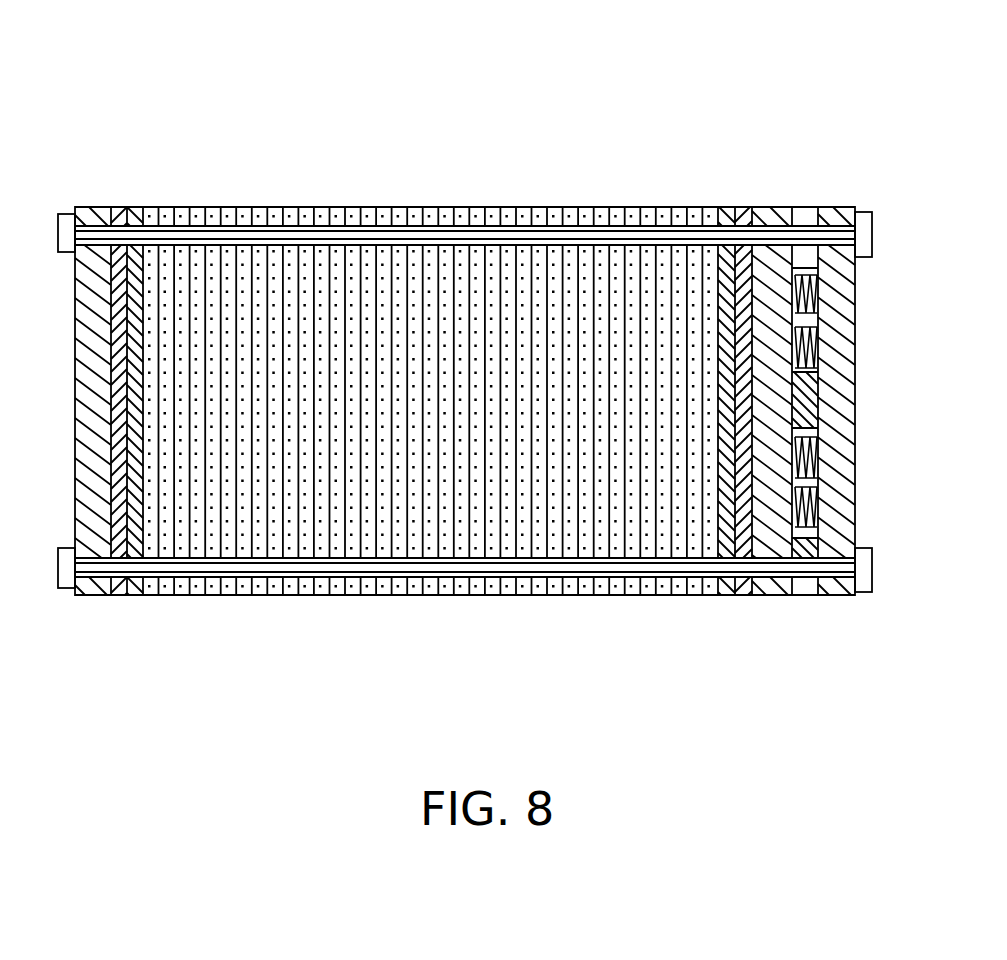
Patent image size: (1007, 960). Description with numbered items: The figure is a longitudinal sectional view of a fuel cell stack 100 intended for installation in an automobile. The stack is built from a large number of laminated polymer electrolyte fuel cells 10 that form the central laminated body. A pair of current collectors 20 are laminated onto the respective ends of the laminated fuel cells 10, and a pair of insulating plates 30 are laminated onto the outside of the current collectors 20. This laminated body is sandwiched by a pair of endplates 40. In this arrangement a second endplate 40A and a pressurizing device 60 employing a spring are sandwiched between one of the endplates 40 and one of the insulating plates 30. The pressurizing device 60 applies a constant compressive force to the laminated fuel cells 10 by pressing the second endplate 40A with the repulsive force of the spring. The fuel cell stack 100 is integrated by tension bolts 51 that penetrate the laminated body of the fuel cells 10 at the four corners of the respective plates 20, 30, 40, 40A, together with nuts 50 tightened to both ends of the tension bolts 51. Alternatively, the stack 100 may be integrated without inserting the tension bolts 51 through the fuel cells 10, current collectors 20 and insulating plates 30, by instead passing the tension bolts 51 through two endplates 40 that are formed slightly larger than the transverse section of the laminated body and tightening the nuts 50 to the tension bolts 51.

The fuel cell stack 100 is at (609, 113).
The polymer electrolyte fuel cells 10 is at (493, 587).
The current collectors 20 is at (140, 583).
The insulating plates 30 is at (123, 580).
The endplates 40 is at (95, 583).
The second endplate 40A is at (783, 583).
The nuts 50 is at (64, 210).
The tension bolts 51 is at (355, 237).
The pressurizing device 60 is at (807, 322).